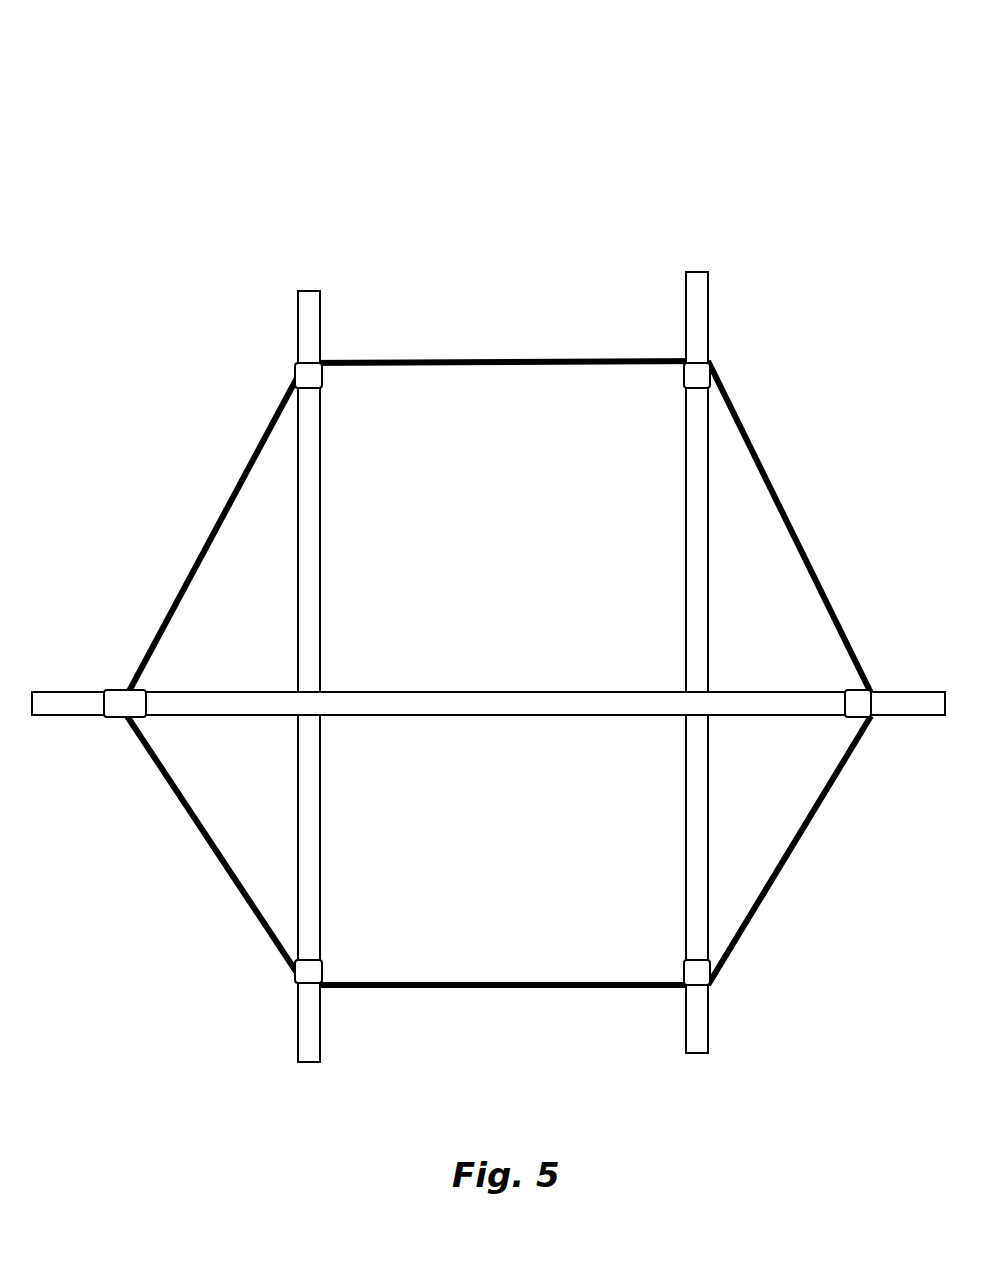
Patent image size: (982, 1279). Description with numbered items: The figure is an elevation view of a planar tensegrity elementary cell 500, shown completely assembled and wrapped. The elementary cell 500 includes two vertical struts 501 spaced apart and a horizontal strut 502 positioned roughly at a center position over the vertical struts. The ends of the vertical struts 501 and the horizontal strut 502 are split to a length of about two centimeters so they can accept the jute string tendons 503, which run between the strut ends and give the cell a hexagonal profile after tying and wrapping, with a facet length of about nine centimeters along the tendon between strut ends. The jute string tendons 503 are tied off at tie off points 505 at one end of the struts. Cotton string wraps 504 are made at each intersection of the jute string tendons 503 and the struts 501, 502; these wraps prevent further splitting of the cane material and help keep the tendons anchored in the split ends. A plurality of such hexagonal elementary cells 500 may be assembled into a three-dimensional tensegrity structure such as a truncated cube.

The planar tensegrity elementary cell 500 is at (549, 157).
The vertical struts 501 is at (686, 628).
The horizontal strut 502 is at (551, 714).
The jute string tendons 503 is at (212, 850).
The cotton string wraps 504 is at (850, 714).
The tie off points 505 is at (118, 716).